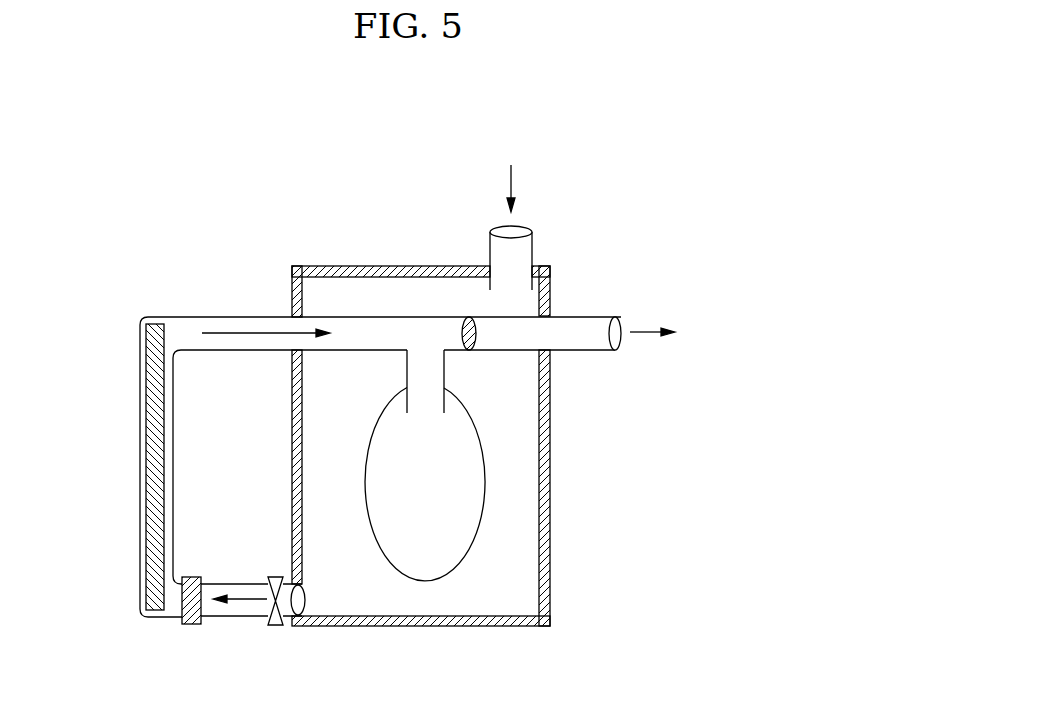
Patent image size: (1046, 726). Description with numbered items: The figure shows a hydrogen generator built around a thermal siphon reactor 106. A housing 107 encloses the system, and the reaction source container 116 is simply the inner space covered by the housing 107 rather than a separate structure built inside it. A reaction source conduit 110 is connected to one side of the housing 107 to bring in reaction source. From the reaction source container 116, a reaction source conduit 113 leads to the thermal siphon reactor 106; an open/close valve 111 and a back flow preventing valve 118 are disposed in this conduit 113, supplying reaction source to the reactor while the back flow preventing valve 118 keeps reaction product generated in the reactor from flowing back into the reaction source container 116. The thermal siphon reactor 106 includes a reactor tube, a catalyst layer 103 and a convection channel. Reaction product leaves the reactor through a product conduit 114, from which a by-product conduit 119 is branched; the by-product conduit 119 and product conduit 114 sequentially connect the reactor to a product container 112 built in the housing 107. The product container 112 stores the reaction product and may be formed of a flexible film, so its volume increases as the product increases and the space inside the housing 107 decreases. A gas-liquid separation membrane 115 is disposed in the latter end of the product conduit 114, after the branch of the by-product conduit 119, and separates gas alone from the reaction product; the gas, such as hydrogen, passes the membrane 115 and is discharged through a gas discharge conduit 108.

The catalyst layer 103 is at (146, 447).
The thermal siphon reactor 106 is at (140, 370).
The housing 107 is at (351, 268).
The gas discharge conduit 108 is at (583, 328).
The reaction source conduit 110 is at (522, 229).
The open/close valve 111 is at (275, 626).
The product container 112 is at (478, 480).
The reaction source conduit 113 is at (228, 584).
The product conduit 114 is at (188, 326).
The gas-liquid separation membrane 115 is at (466, 318).
The reaction source container 116 is at (515, 575).
The back flow preventing valve 118 is at (191, 625).
The by-product conduit 119 is at (447, 367).